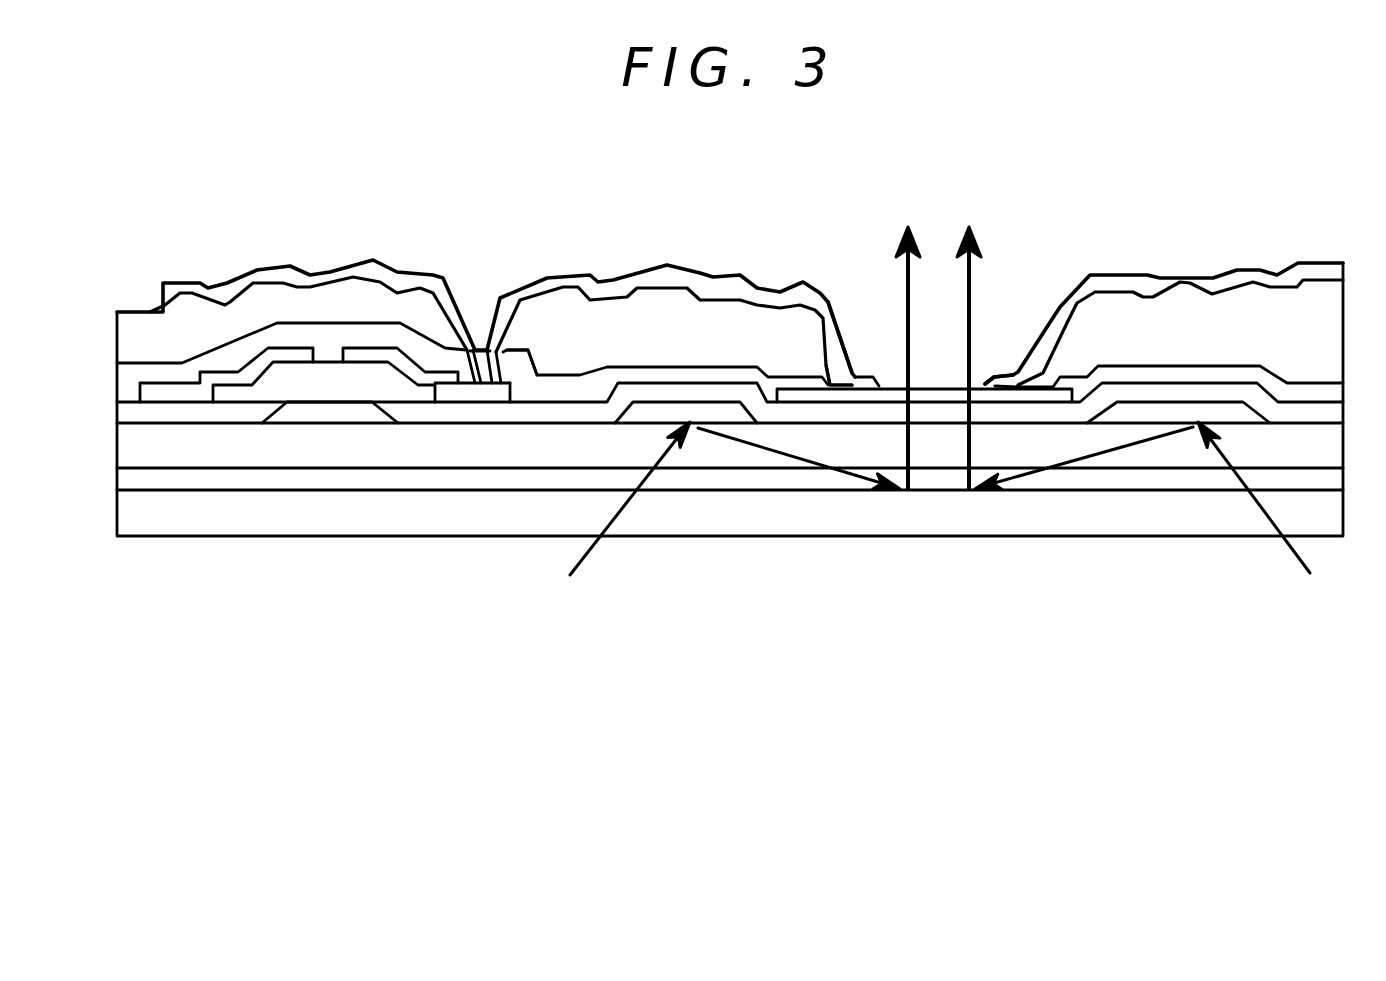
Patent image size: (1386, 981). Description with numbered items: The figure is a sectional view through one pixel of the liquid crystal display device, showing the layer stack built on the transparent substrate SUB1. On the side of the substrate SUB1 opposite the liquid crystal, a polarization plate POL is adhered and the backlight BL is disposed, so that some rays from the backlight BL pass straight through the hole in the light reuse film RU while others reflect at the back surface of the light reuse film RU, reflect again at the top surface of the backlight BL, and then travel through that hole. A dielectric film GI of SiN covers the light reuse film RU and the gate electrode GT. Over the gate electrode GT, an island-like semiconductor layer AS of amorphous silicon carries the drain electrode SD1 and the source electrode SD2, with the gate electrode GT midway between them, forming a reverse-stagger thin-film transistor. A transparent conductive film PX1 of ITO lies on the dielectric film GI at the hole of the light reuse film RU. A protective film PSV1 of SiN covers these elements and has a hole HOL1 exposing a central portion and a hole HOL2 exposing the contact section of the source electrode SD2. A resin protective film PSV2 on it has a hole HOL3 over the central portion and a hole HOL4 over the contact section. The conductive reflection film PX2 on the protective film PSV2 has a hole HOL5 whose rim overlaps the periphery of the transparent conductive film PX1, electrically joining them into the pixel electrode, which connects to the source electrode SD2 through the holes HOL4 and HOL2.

The transparent substrate SUB1 is at (188, 448).
The polarization plate POL is at (541, 484).
The backlight BL is at (408, 527).
The dielectric film GI is at (487, 413).
The gate electrode GT is at (303, 415).
The light reuse film RU is at (727, 415).
The semiconductor layer AS is at (340, 376).
The drain electrode SD1 is at (240, 377).
The source electrode SD2 is at (407, 362).
The protective film PSV1 is at (305, 333).
The protective film PSV2 is at (145, 323).
The transparent conductive film PX1 is at (930, 390).
The conductive reflection film PX2 is at (283, 277).
The hole HOL1 is at (830, 383).
The hole HOL2 is at (533, 368).
The hole HOL3 is at (838, 318).
The hole HOL4 is at (505, 362).
The hole HOL5 is at (985, 387).